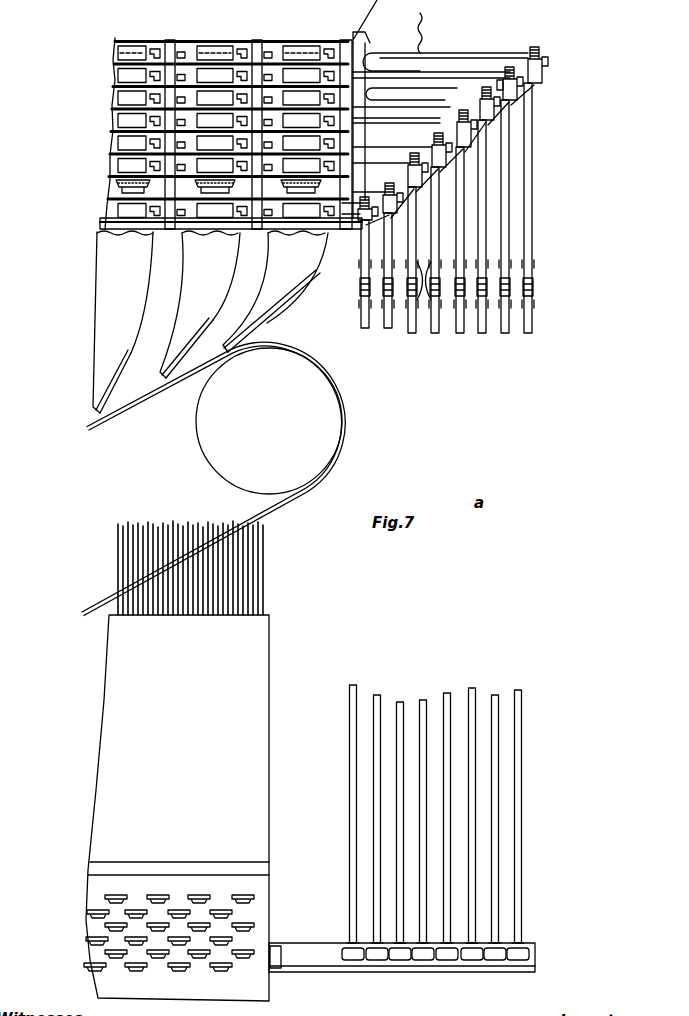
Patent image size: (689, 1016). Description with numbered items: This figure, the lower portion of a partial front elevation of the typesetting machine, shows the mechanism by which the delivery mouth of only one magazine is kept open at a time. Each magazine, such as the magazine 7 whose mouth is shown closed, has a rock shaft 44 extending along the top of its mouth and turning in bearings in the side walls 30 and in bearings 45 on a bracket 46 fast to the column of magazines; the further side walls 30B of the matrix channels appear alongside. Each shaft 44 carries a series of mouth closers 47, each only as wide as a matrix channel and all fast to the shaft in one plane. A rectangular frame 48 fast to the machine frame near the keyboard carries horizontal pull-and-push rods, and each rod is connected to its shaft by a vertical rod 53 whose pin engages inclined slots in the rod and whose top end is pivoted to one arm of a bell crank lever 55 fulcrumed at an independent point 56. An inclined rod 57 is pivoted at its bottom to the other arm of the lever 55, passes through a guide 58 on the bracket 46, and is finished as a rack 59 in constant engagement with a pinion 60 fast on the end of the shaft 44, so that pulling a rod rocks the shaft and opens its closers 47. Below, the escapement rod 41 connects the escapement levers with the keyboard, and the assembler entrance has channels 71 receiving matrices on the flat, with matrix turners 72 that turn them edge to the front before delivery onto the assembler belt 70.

The magazine 7 is at (118, 185).
The side wall 30 is at (343, 52).
The vertical post 30B is at (172, 50).
The escapement rod 41 is at (262, 577).
The rock shaft 44 is at (430, 80).
The bearings 45 is at (544, 70).
The bracket 46 is at (480, 120).
The mouth closer 47 is at (138, 50).
The rectangular frame 48 is at (306, 947).
The vertical rod 53 is at (366, 330).
The bell crank lever 55 is at (432, 330).
The fulcrum point 56 is at (360, 283).
The inclined rod 57 is at (510, 212).
The guide 58 is at (537, 85).
The rack 59 is at (484, 90).
The pinion 60 is at (540, 55).
The assembler belt 70 is at (128, 418).
The channels 71 is at (210, 322).
The matrix turners 72 is at (188, 348).